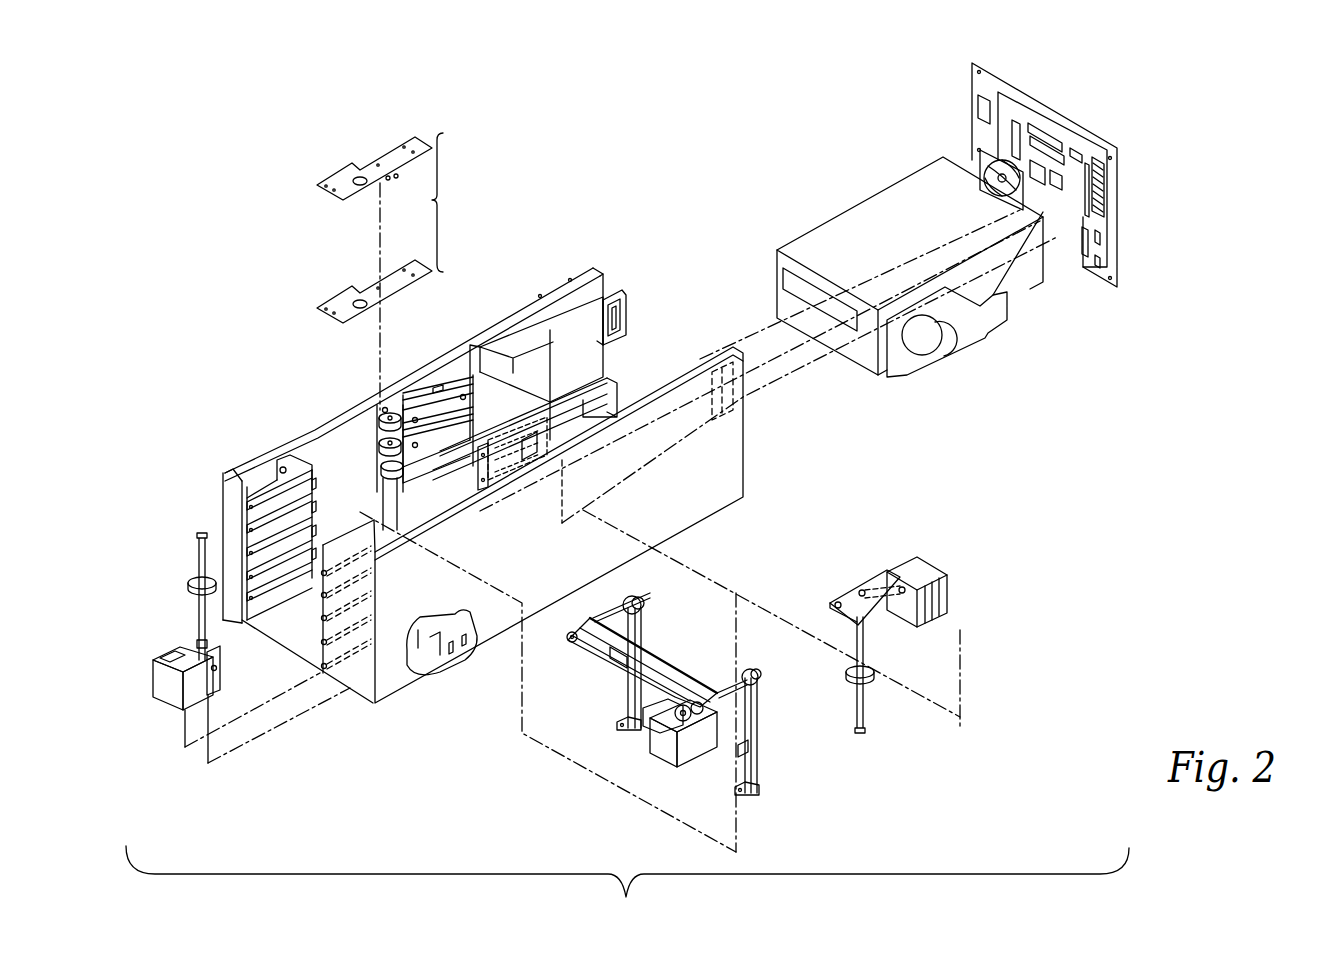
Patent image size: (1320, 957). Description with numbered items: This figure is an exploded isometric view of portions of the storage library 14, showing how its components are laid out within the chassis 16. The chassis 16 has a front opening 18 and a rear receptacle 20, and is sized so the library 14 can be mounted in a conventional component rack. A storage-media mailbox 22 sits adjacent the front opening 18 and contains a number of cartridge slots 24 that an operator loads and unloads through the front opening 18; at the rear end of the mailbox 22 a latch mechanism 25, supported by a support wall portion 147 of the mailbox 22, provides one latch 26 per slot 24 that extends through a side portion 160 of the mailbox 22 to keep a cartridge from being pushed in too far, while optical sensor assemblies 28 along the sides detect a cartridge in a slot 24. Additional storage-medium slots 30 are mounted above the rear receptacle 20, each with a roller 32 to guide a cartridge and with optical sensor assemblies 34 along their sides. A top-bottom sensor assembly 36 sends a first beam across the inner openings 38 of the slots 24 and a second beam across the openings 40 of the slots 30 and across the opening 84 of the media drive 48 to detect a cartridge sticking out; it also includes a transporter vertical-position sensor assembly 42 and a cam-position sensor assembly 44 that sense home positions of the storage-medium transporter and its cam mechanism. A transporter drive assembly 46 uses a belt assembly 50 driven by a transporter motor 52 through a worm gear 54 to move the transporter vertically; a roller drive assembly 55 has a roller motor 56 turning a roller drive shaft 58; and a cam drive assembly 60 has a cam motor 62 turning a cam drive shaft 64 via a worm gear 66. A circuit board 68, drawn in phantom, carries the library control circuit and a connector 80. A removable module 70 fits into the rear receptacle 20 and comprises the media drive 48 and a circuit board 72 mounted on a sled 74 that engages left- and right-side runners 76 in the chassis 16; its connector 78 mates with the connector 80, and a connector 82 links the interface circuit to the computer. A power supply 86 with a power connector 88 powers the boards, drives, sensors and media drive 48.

The library 14 is at (628, 166).
The chassis 16 is at (383, 688).
The front opening 18 is at (245, 636).
The rear receptacle 20 is at (652, 348).
The storage-media mailbox 22 is at (270, 468).
The storage-medium slots 24 is at (252, 498).
The latch mechanism 25 is at (316, 456).
The latch 26 is at (318, 490).
The optical sensor assemblies 28 is at (238, 568).
The storage-medium slots 30 is at (480, 383).
The roller 32 is at (385, 412).
The optical sensor assemblies 34 is at (440, 412).
The top-bottom sensor assembly 36 is at (452, 202).
The inner opening 38 is at (338, 519).
The opening 40 is at (450, 466).
The transporter vertical-position sensor assembly 42 is at (397, 183).
The cam-position sensor assembly 44 is at (355, 195).
The transporter drive assembly 46 is at (678, 648).
The media drive 48 is at (822, 226).
The belt assembly 50 is at (628, 587).
The transporter motor 52 is at (690, 752).
The worm gear 54 is at (662, 742).
The roller drive assembly 55 is at (872, 562).
The roller motor 56 is at (918, 566).
The roller drive shaft 58 is at (868, 648).
The cam drive assembly 60 is at (160, 708).
The cam motor 62 is at (155, 668).
The cam drive shaft 64 is at (199, 548).
The worm gear 66 is at (216, 652).
The circuit board 68 is at (735, 452).
The module 70 is at (1018, 360).
The circuit board 72 is at (1000, 108).
The sled 74 is at (1030, 287).
The left- and right-side runners 76 is at (612, 393).
The connector 78 is at (1118, 160).
The connector 80 is at (722, 368).
The connector 82 is at (1063, 135).
The opening 84 is at (784, 268).
The power supply 86 is at (550, 310).
The power connector 88 is at (620, 295).
The support wall portion 147 is at (228, 530).
The side portion 160 is at (240, 640).